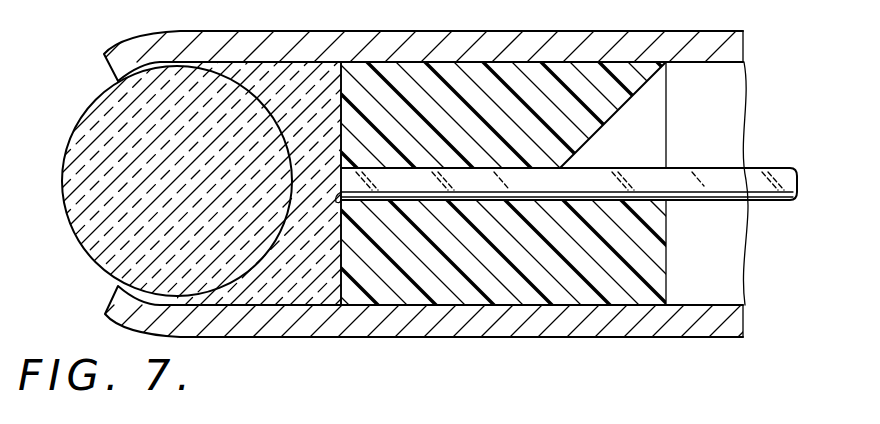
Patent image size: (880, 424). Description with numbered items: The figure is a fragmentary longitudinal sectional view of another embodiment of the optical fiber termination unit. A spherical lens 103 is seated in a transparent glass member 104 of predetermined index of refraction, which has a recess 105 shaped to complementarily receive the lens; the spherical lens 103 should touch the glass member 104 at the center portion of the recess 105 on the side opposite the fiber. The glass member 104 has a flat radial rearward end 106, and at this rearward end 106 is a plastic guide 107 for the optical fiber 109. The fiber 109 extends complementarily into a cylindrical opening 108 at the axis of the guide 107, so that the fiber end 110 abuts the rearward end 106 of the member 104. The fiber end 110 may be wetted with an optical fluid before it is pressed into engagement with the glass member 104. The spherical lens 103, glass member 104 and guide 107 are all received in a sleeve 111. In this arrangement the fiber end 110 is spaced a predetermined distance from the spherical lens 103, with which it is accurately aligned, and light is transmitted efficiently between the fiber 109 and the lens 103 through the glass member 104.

The spherical lens 103 is at (80, 238).
The transparent glass member 104 is at (298, 77).
The recess 105 is at (262, 258).
The flat radial rearward end 106 is at (344, 100).
The plastic guide 107 is at (464, 297).
The cylindrical opening 108 is at (407, 168).
The optical fiber 109 is at (503, 168).
The fiber end 110 is at (339, 195).
The sleeve 111 is at (517, 34).